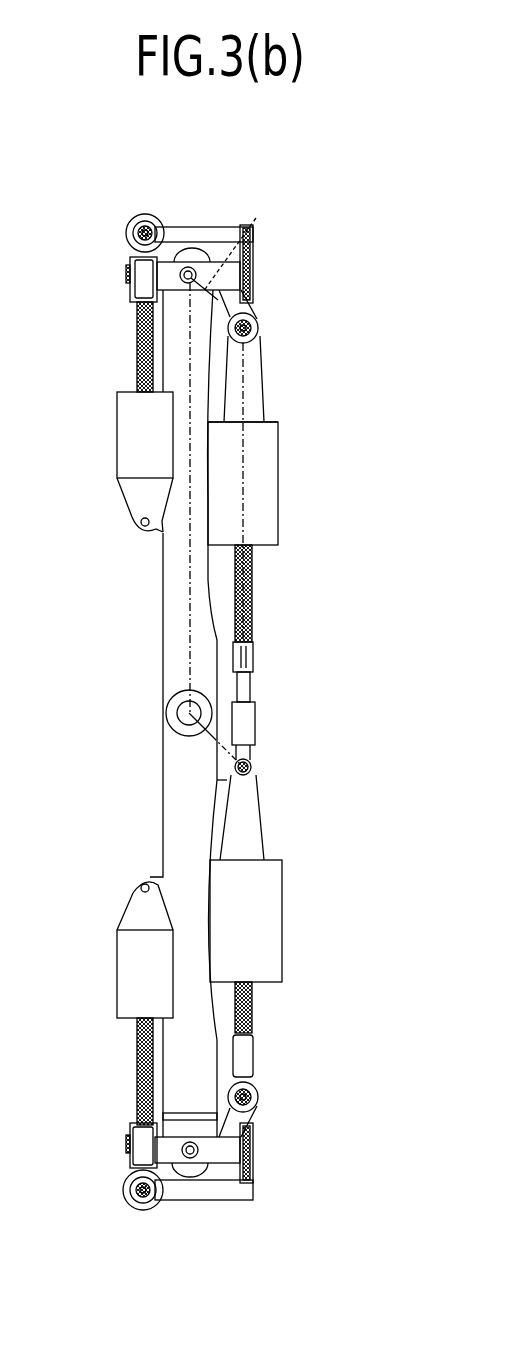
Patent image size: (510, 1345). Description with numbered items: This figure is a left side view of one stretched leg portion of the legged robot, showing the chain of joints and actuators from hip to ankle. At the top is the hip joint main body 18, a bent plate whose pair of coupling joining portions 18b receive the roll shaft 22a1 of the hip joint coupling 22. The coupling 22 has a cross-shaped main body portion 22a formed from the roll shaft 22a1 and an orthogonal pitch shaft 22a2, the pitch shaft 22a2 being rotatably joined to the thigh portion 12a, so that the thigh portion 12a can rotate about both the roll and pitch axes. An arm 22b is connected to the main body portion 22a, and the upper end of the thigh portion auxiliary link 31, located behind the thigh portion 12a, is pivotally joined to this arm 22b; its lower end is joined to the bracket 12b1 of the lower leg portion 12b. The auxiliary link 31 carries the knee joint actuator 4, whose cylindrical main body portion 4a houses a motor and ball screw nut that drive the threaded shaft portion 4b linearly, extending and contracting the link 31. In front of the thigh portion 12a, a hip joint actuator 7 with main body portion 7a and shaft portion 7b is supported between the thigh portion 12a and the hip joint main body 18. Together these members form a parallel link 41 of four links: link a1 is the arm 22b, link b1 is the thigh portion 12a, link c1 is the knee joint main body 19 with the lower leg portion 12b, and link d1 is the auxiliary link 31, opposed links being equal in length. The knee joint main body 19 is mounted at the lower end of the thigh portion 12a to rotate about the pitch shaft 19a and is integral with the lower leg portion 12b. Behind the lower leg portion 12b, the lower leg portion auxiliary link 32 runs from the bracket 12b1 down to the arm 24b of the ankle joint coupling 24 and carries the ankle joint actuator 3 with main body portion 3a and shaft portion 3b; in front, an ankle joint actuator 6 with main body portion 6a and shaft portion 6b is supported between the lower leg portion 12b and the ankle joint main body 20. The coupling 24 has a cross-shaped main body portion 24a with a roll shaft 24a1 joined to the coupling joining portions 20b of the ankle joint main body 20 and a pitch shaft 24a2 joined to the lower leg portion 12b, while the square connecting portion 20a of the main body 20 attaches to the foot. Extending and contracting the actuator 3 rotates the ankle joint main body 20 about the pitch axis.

The hip joint main body 18 is at (222, 236).
The coupling joining portions 18b is at (127, 256).
The link a1 is at (243, 243).
The hip joint coupling 22 is at (208, 272).
The main body portion 22a is at (232, 276).
The roll shaft 22a1 is at (131, 277).
The pitch shaft 22a2 is at (187, 267).
The arm 22b is at (258, 318).
The hip joint actuators 7 is at (97, 417).
The main body portion 7a is at (114, 462).
The shaft portion 7b is at (137, 350).
The thigh portion auxiliary link 31 is at (252, 376).
The parallel link 41 is at (248, 432).
The link d1 is at (248, 470).
The knee joint actuator 4 is at (296, 584).
The main body portion 4a is at (268, 518).
The shaft portion 4b is at (293, 652).
The link b1 is at (188, 602).
The thigh portion 12a is at (178, 668).
The pitch shaft 19a is at (175, 714).
The knee joint main body 19 is at (173, 726).
The link c1 is at (217, 743).
The bracket 12b1 is at (222, 769).
The lower leg portion 12b is at (185, 818).
The lower leg portion auxiliary link 32 is at (249, 838).
The ankle joint actuator 3 is at (297, 968).
The main body portion 3a is at (261, 960).
The shaft portion 3b is at (294, 1029).
The ankle joint actuators 6 is at (104, 1003).
The main body portion 6a is at (117, 1007).
The shaft portion 6b is at (63, 1000).
The ankle joint coupling 24 is at (215, 1171).
The main body portion 24a is at (234, 1152).
The roll shaft 24a1 is at (163, 1147).
The pitch shaft 24a2 is at (188, 1163).
The arm 24b is at (259, 1118).
The ankle joint main body 20 is at (192, 1194).
The connecting portion 20a is at (205, 1194).
The coupling joining portions 20b is at (253, 1174).